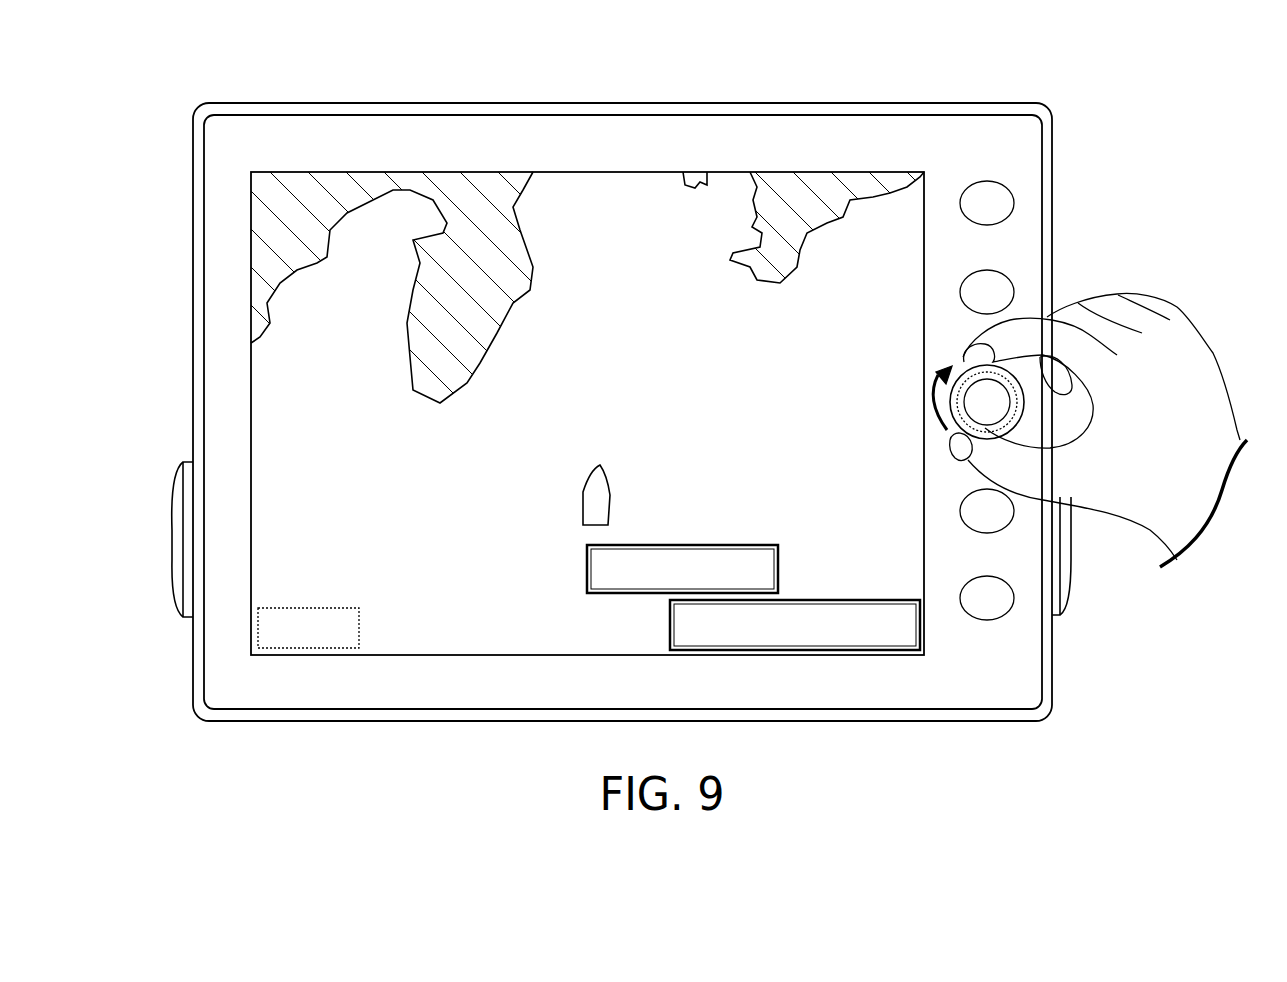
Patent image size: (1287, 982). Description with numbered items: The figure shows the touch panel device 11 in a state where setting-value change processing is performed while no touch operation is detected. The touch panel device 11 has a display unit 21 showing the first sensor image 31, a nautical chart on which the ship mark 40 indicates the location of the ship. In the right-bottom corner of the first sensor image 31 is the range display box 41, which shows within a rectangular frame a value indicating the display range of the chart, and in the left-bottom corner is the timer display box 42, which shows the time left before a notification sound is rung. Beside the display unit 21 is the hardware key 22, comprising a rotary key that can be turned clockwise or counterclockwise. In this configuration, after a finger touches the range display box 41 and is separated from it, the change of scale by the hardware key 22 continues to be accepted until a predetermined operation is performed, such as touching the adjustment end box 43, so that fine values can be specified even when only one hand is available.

The touch panel device 11 is at (1120, 136).
The display unit 21 is at (932, 169).
The hardware key 22 is at (1034, 255).
The first sensor image 31 is at (256, 207).
The ship mark 40 is at (580, 505).
The range display box 41 is at (787, 600).
The timer display box 42 is at (300, 608).
The adjustment end box 43 is at (692, 545).